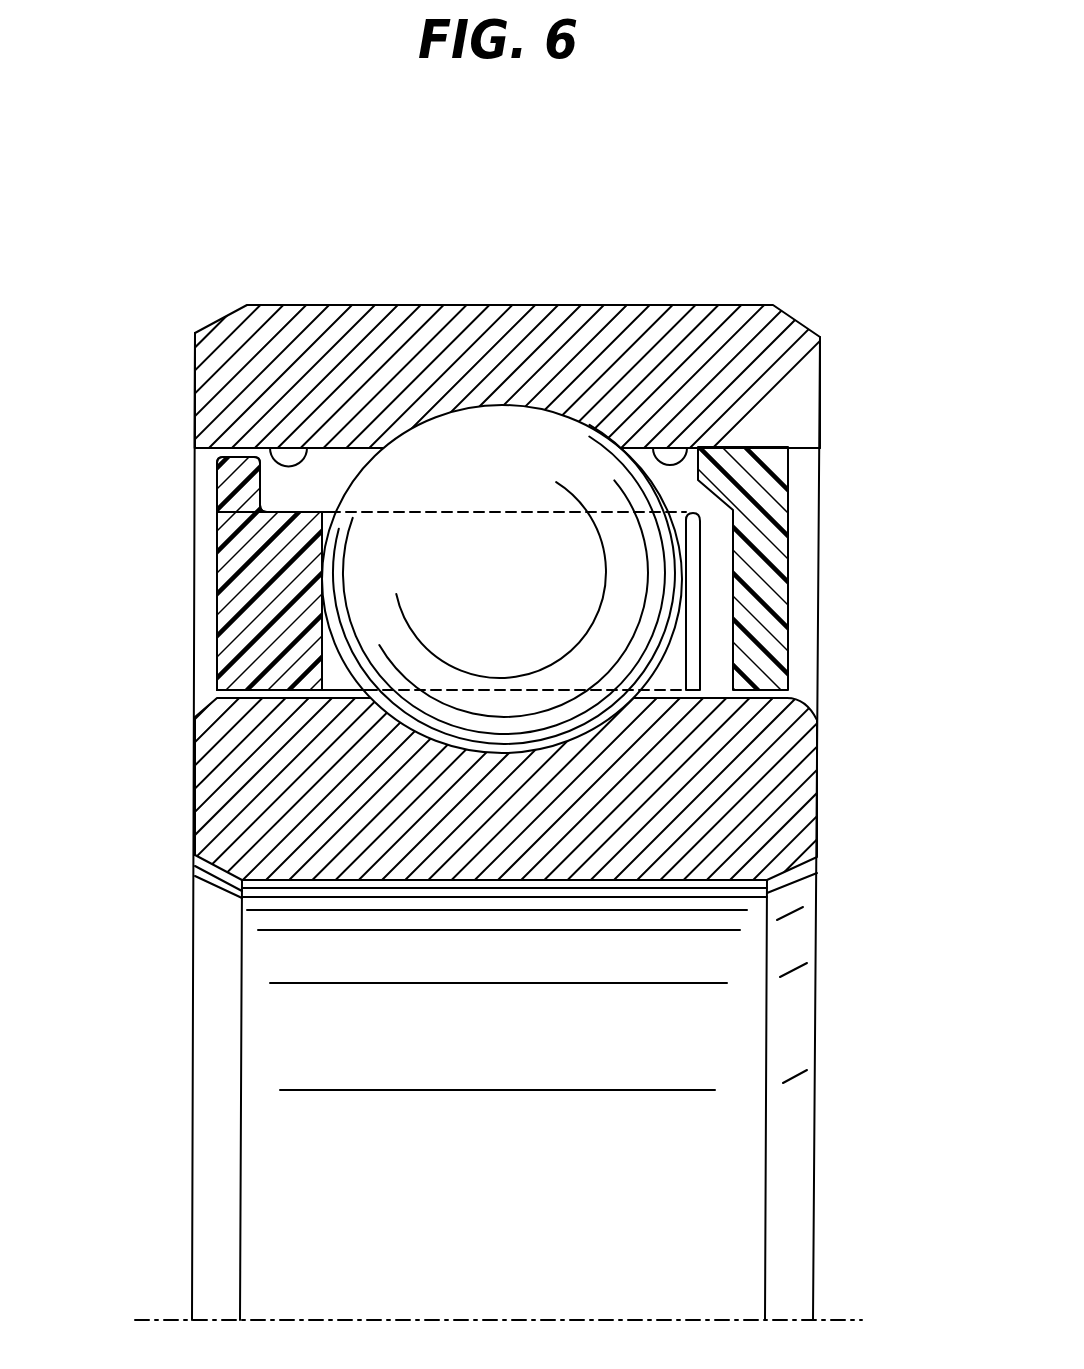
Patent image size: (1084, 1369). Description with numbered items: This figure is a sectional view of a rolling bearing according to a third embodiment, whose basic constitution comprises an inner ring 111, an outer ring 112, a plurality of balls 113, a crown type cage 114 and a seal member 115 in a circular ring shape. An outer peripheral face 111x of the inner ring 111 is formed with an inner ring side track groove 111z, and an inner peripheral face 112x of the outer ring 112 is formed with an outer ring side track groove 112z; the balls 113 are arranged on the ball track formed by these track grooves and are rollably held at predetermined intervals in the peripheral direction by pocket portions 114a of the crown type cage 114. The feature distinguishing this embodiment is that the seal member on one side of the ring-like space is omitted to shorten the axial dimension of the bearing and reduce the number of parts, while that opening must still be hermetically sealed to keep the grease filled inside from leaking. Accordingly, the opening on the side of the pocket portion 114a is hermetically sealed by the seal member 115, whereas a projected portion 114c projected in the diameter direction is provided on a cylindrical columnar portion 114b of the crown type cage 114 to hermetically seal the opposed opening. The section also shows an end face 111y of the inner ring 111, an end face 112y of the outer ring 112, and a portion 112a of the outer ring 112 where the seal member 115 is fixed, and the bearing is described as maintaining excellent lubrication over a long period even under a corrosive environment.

The inner ring 111 is at (768, 770).
The outer peripheral face of the inner ring 111x is at (337, 692).
The inner ring end face 111y is at (195, 791).
The inner ring side track groove 111z is at (567, 745).
The outer ring 112 is at (398, 305).
The outer ring inner peripheral surface 112a is at (773, 445).
The inner peripheral face of the outer ring 112x is at (270, 448).
The outer ring end face 112y is at (195, 386).
The outer ring side track groove 112z is at (477, 409).
The balls 113 is at (557, 433).
The crown type cage 114 is at (471, 573).
The pocket portion 114a is at (690, 657).
The cylindrical columnar portion 114b is at (270, 583).
The projected portion 114c is at (240, 485).
The seal member 115 is at (773, 537).